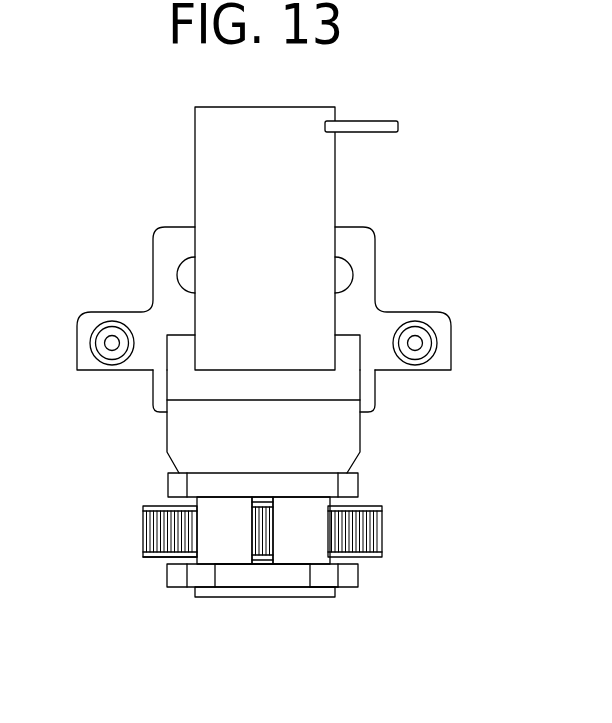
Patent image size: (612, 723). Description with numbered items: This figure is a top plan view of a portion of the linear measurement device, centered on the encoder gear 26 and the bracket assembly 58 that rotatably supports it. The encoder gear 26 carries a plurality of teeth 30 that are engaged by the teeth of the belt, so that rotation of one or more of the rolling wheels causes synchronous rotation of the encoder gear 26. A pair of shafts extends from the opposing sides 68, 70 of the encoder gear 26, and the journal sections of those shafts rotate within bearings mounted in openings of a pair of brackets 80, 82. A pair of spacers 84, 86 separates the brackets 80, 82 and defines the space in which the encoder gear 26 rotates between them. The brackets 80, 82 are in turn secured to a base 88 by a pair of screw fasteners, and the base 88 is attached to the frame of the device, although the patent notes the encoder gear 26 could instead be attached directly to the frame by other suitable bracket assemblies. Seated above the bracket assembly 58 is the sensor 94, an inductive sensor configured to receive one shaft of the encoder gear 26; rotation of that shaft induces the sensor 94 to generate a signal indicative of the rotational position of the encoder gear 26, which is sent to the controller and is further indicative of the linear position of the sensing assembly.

The encoder gear 26 is at (131, 554).
The teeth 30 is at (367, 504).
The bracket assembly 58 is at (455, 308).
The side 68 is at (157, 557).
The side 70 is at (156, 504).
The bracket 80 is at (358, 575).
The bracket 82 is at (168, 474).
The spacer 84 is at (238, 565).
The spacer 86 is at (313, 565).
The base 88 is at (140, 312).
The sensor 94 is at (195, 107).